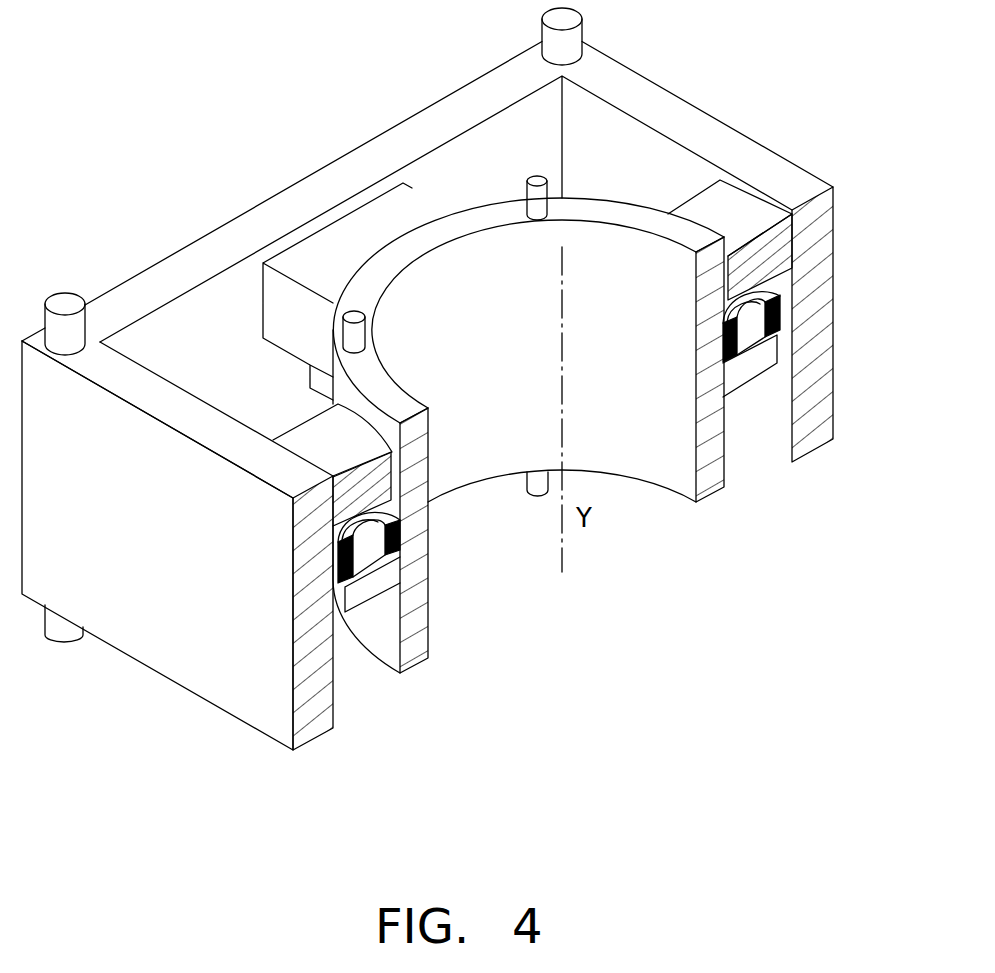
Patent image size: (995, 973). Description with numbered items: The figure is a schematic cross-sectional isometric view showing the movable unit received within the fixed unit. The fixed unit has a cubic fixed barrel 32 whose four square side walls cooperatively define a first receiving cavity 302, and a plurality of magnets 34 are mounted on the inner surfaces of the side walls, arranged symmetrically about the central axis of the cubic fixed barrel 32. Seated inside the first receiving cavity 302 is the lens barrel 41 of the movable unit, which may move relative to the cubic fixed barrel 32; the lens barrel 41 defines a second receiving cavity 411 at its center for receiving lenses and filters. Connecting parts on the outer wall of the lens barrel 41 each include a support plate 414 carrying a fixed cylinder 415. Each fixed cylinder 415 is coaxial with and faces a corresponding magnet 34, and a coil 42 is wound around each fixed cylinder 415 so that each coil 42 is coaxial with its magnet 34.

The first receiving cavity 302 is at (602, 132).
The cubic fixed barrel 32 is at (813, 437).
The magnet 34 is at (718, 217).
The coil 42 is at (777, 302).
The lens barrel 41 is at (705, 473).
The second receiving cavity 411 is at (455, 308).
The fixed cylinder 415 is at (372, 552).
The support plate 414 is at (367, 587).